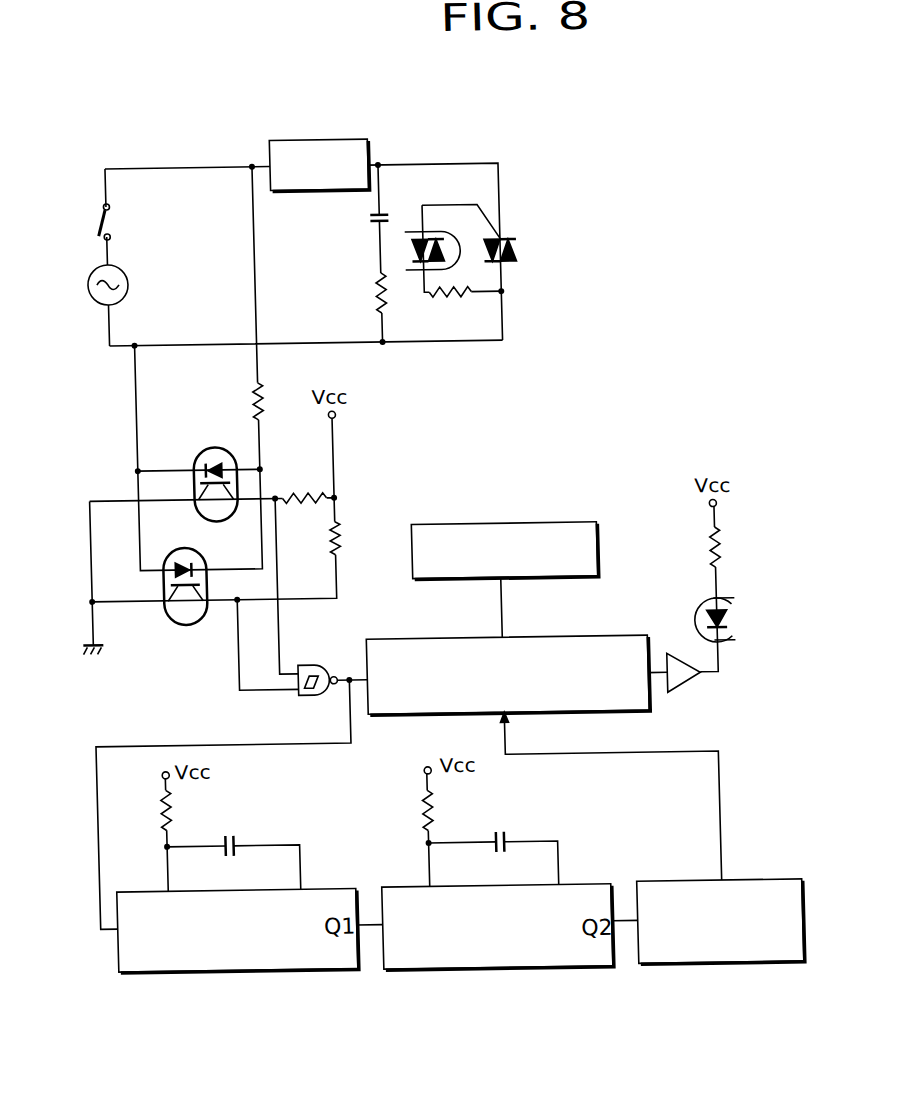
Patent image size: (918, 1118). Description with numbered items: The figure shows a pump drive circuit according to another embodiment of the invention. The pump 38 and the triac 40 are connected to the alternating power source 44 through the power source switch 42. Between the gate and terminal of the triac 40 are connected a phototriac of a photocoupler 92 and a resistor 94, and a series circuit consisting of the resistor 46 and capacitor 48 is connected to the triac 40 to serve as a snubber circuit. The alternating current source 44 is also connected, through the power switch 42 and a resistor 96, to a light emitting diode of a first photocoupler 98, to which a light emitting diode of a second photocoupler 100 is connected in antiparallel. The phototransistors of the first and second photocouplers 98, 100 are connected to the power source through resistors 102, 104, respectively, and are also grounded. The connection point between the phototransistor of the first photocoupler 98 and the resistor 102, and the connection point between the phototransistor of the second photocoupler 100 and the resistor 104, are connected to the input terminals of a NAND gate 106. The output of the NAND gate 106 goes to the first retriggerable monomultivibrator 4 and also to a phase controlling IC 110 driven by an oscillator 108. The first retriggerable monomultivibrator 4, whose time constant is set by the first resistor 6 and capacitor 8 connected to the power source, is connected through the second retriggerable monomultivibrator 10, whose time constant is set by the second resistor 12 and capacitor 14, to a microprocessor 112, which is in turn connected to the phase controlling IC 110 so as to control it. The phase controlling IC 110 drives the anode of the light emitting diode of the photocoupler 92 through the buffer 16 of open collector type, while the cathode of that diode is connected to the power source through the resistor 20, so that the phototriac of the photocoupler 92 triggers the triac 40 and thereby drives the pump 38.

The first retriggerable monomultivibrator 4 is at (225, 969).
The first resistor 6 is at (151, 808).
The capacitor 8 is at (221, 832).
The second retriggerable monomultivibrator 10 is at (482, 969).
The second resistor 12 is at (409, 807).
The capacitor 14 is at (487, 830).
The buffer 16 is at (676, 694).
The resistor 20 is at (711, 550).
The pump 38 is at (328, 138).
The triac 40 is at (528, 251).
The power source switch 42 is at (121, 218).
The alternating power source 44 is at (141, 279).
The resistor 46 is at (378, 287).
The capacitor 48 is at (378, 218).
The photocoupler 92 is at (409, 237).
The resistor 94 is at (452, 299).
The resistor 96 is at (271, 397).
The first photocoupler 98 is at (213, 443).
The second photocoupler 100 is at (198, 546).
The resistor 102 is at (299, 487).
The resistor 104 is at (348, 528).
The NAND gate 106 is at (306, 663).
The oscillator 108 is at (484, 520).
The phase controlling IC 110 is at (558, 637).
The microprocessor 112 is at (698, 969).